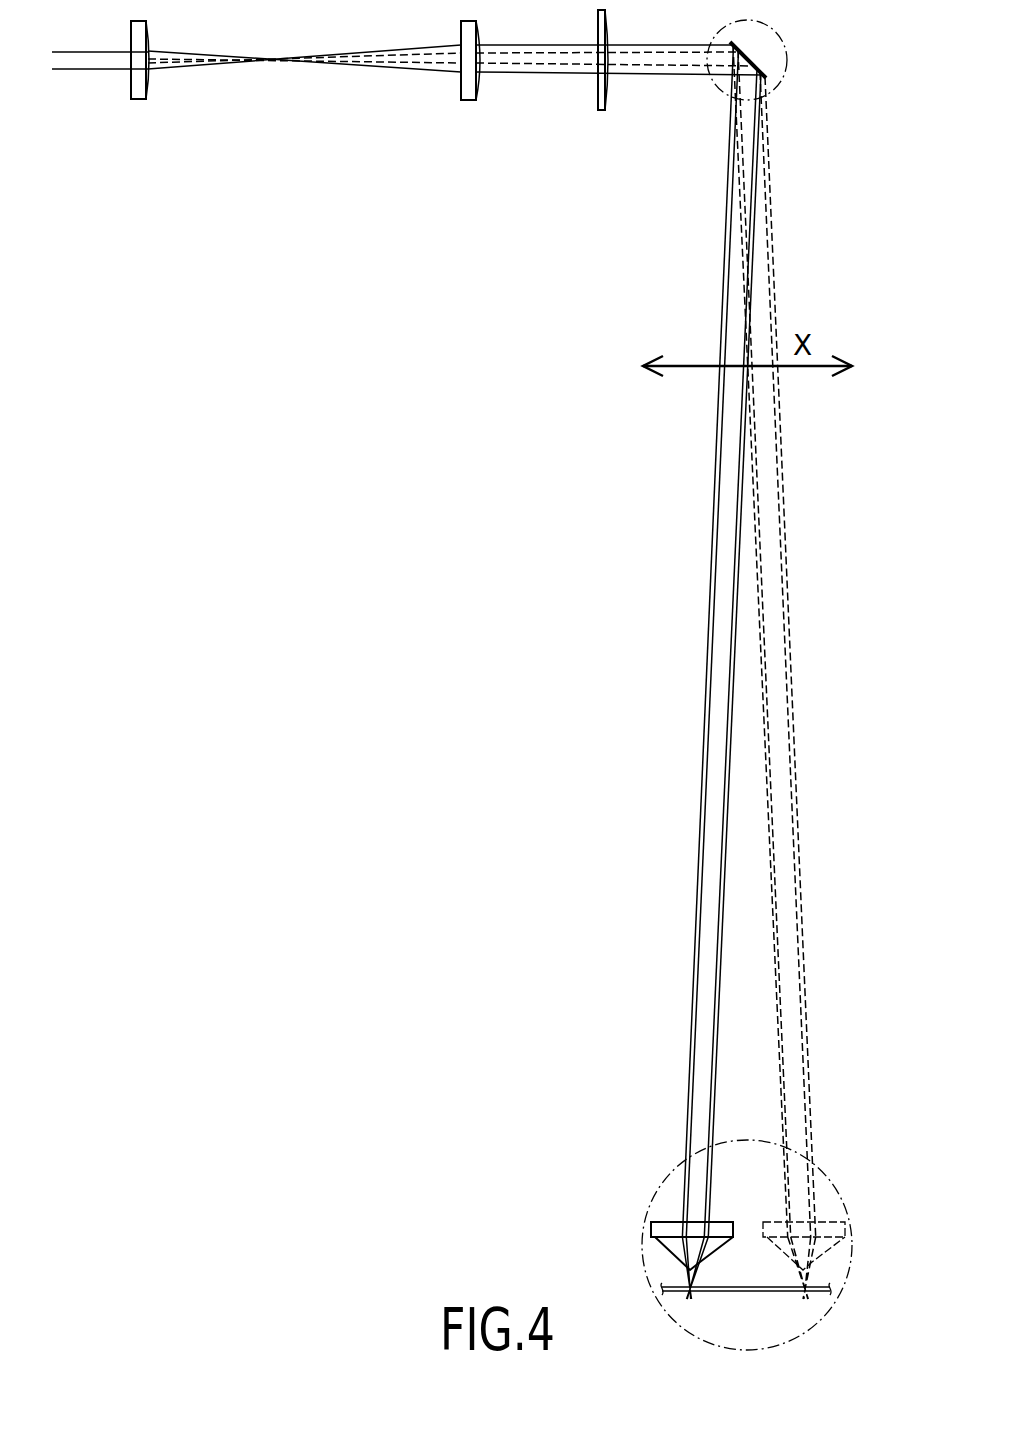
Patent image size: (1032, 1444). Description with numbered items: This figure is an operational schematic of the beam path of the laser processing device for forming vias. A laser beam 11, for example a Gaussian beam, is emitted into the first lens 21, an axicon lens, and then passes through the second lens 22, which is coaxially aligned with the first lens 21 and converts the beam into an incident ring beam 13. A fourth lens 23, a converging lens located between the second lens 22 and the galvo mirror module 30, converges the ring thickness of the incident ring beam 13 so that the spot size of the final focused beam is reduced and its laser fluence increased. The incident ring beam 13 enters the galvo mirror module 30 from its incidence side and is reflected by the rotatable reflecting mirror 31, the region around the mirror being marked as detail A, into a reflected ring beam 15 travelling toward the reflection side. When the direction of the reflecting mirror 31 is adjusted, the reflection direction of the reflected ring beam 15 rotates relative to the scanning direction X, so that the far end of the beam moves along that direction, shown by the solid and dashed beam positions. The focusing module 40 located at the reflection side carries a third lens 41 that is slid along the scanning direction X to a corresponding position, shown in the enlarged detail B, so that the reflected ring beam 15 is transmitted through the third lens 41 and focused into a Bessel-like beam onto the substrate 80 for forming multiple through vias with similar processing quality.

The laser beam 11 is at (87, 70).
The first lens 21 is at (138, 100).
The second lens 22 is at (468, 100).
The fourth lens 23 is at (602, 110).
The incident ring beam 13 is at (552, 75).
The galvo mirror module 30 is at (776, 63).
The reflecting mirror 31 is at (753, 57).
The region A (scanner region) A is at (778, 85).
The reflected ring beam 15 is at (727, 240).
The focusing module 40 is at (720, 1228).
The third lens 41 is at (665, 1248).
The substrate 80 is at (767, 1290).
The region B (focusing region) B is at (838, 1192).